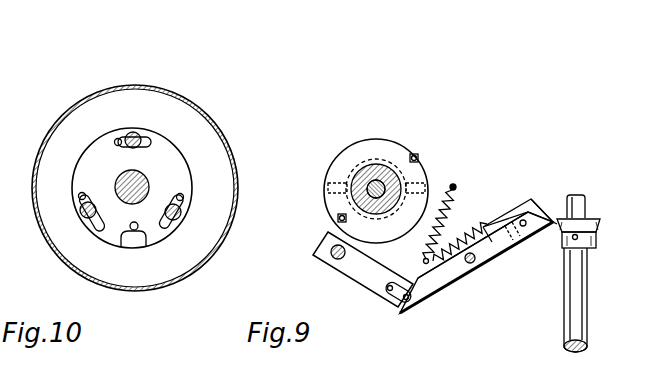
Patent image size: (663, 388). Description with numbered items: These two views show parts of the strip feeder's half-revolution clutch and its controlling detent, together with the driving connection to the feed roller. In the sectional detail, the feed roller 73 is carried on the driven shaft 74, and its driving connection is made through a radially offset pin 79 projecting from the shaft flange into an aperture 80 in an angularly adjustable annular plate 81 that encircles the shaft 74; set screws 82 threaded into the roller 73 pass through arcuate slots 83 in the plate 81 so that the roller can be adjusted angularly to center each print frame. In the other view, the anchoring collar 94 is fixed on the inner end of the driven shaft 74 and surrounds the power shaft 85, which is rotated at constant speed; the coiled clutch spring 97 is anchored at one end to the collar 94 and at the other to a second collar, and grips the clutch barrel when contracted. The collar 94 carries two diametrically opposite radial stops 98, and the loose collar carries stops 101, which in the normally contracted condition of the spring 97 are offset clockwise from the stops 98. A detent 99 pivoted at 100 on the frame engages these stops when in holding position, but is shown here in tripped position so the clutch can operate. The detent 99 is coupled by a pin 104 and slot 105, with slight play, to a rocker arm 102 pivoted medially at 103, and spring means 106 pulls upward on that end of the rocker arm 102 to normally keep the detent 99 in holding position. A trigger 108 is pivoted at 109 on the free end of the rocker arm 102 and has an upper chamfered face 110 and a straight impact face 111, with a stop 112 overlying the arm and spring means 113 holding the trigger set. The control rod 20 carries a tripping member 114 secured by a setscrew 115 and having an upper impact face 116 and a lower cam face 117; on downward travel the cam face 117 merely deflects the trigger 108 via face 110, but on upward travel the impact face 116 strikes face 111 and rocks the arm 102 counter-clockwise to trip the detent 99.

In FIG. 10, the feed roller 73 is at (180, 109).
In FIG. 10, the annular plate 81 is at (160, 155).
In FIG. 10, the driven shaft 74 is at (146, 187).
In FIG. 10, the set screws 82 is at (136, 132).
In FIG. 10, the arcuate slots 83 is at (118, 138).
In FIG. 10, the radially offset pin 79 is at (130, 231).
In FIG. 10, the aperture 80 is at (144, 245).
In FIG. 9, the anchoring collar 94 is at (377, 140).
In FIG. 9, the power shaft 85 is at (363, 170).
In FIG. 9, the coiled clutch spring 97 is at (360, 172).
In FIG. 9, the radial stops 98 is at (418, 157).
In FIG. 9, the stops 101 is at (420, 159).
In FIG. 9, the detent 99 is at (370, 256).
In FIG. 9, the pivot 100 is at (334, 260).
In FIG. 9, the slot 105 is at (391, 296).
In FIG. 9, the pin 104 is at (414, 302).
In FIG. 9, the rocker arm 102 is at (446, 277).
In FIG. 9, the pivot 103 is at (476, 261).
In FIG. 9, the trigger 108 is at (510, 215).
In FIG. 9, the stop 112 is at (492, 221).
In FIG. 9, the chamfered face 110 is at (544, 222).
In FIG. 9, the pivot 109 is at (517, 236).
In FIG. 9, the impact face 111 is at (525, 227).
In FIG. 9, the spring means 106 is at (455, 194).
In FIG. 9, the spring means 113 is at (486, 224).
In FIG. 9, the control rod 20 is at (578, 304).
In FIG. 9, the upper impact face 116 is at (559, 212).
In FIG. 9, the tripping member 114 is at (599, 238).
In FIG. 9, the setscrew 115 is at (578, 241).
In FIG. 9, the cam face 117 is at (557, 238).